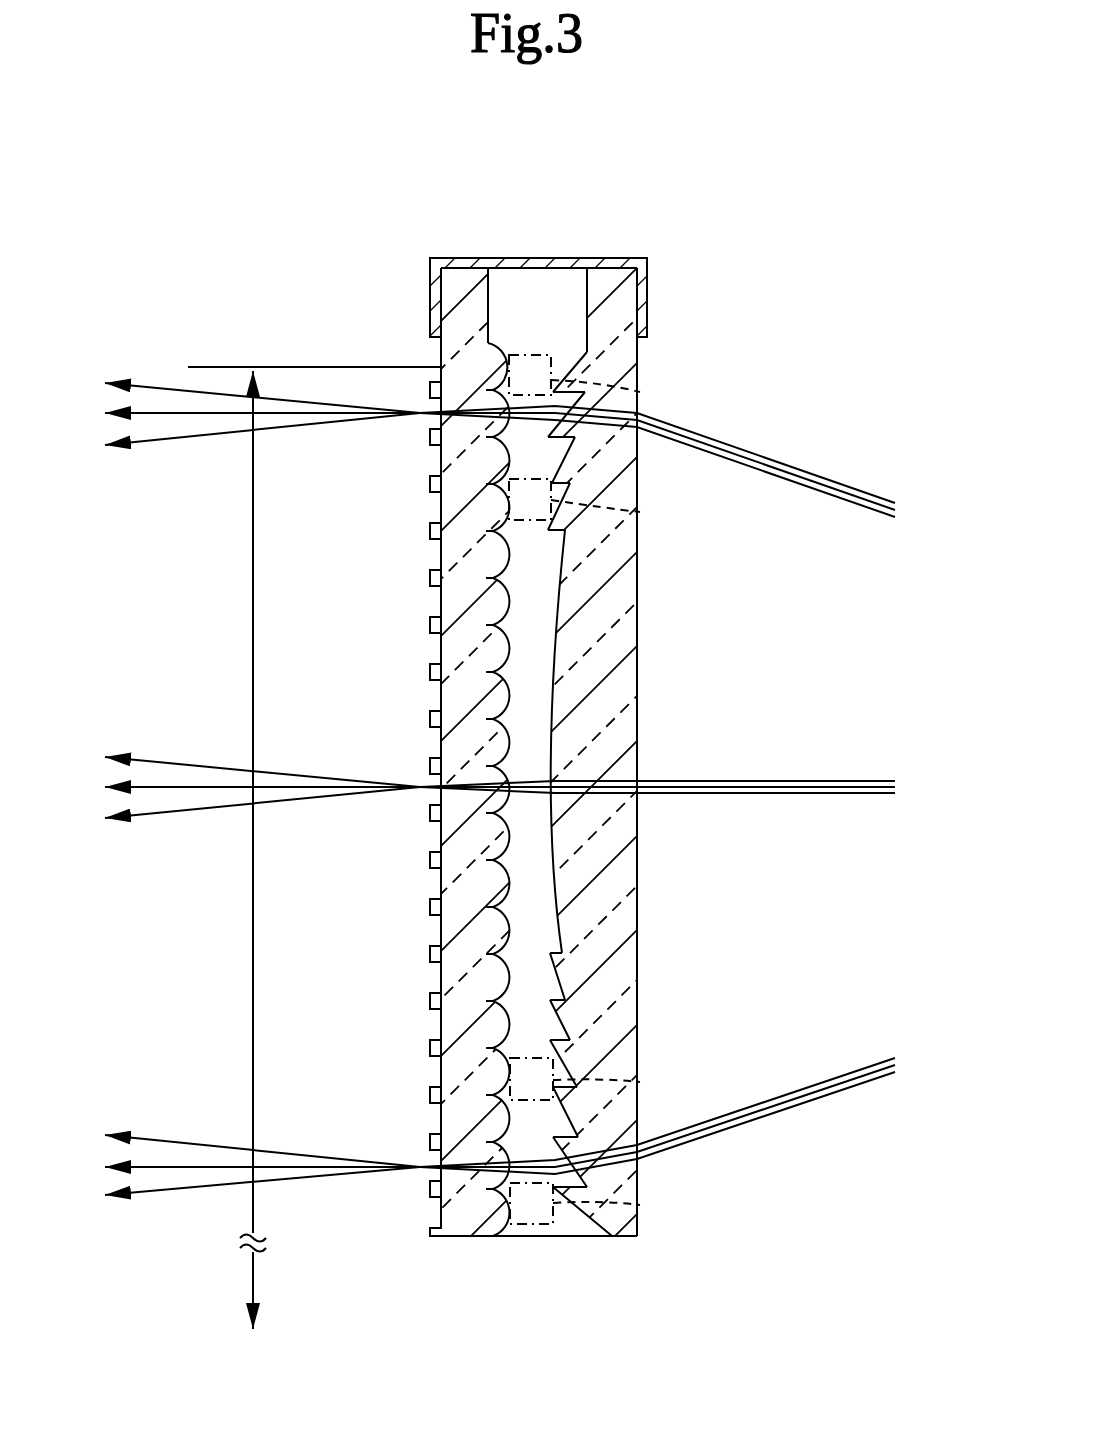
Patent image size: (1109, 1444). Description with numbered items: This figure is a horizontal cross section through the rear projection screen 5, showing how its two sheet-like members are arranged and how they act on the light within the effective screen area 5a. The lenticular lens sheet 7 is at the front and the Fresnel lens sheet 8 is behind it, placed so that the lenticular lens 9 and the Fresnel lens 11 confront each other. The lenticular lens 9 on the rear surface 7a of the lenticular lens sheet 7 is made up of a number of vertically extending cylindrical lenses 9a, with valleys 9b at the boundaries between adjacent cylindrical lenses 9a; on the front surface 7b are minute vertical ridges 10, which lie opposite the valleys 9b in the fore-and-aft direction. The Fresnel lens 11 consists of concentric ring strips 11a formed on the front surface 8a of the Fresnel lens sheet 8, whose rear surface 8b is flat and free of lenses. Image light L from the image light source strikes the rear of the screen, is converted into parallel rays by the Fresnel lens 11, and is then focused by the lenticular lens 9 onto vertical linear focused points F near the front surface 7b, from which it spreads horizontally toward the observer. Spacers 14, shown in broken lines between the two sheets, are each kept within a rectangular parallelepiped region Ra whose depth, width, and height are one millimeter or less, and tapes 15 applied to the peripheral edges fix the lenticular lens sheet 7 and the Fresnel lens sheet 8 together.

The projection screen 5 is at (700, 265).
The effective screen area 5a is at (253, 960).
The lenticular lens sheet 7 is at (425, 1200).
The rear surface 7a is at (492, 290).
The front surface 7b is at (433, 350).
The Fresnel lens sheet 8 is at (640, 370).
The front surface 8a is at (585, 318).
The rear surface 8b is at (640, 1236).
The lenticular lens 9 is at (555, 745).
The cylindrical lens 9a is at (510, 535).
The valley 9b is at (595, 447).
The ridge 10 is at (440, 445).
The Fresnel lens 11 is at (500, 1010).
The concentric ring strip 11a is at (562, 362).
The spacer 14 is at (640, 392).
The tape 15 is at (647, 315).
The rectangular parallelepiped region Ra is at (525, 355).
The image light L is at (160, 380).
The focused point F is at (420, 413).